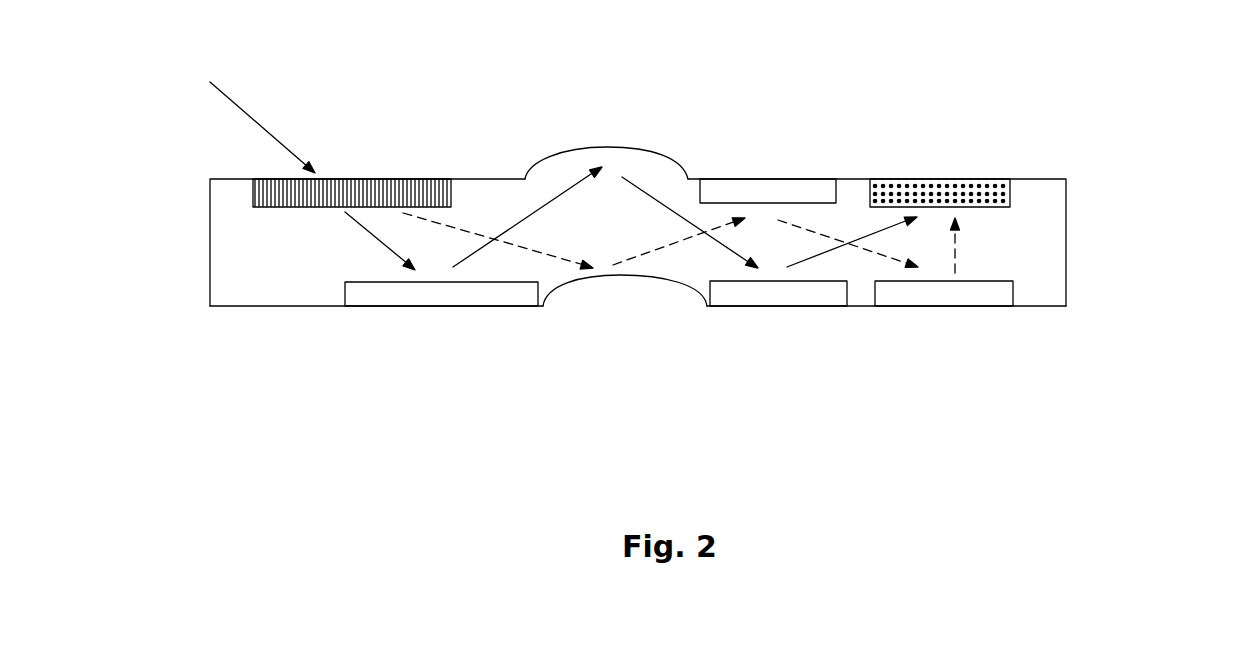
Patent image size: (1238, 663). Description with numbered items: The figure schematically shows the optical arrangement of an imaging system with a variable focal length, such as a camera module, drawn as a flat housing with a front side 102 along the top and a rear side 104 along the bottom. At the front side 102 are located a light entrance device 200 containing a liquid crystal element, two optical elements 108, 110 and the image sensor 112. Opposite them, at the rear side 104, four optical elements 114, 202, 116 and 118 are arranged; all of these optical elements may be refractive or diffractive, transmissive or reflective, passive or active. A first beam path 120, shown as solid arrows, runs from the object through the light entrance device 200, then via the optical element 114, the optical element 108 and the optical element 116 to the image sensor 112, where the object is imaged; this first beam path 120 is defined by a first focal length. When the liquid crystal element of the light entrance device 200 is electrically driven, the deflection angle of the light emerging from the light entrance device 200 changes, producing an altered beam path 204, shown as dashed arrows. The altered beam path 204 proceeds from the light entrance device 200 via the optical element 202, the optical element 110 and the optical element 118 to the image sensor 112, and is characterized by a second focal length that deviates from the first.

The front side 102 is at (1033, 180).
The rear side 104 is at (237, 309).
The optical element 108 is at (637, 147).
The optical element 110 is at (782, 187).
The image sensor 112 is at (935, 183).
The optical element 114 is at (478, 298).
The optical element 116 is at (792, 298).
The optical element 118 is at (977, 305).
The first beam path 120 is at (263, 120).
The light entrance device 200 is at (400, 180).
The optical element 202 is at (650, 277).
The altered beam path 204 is at (465, 232).